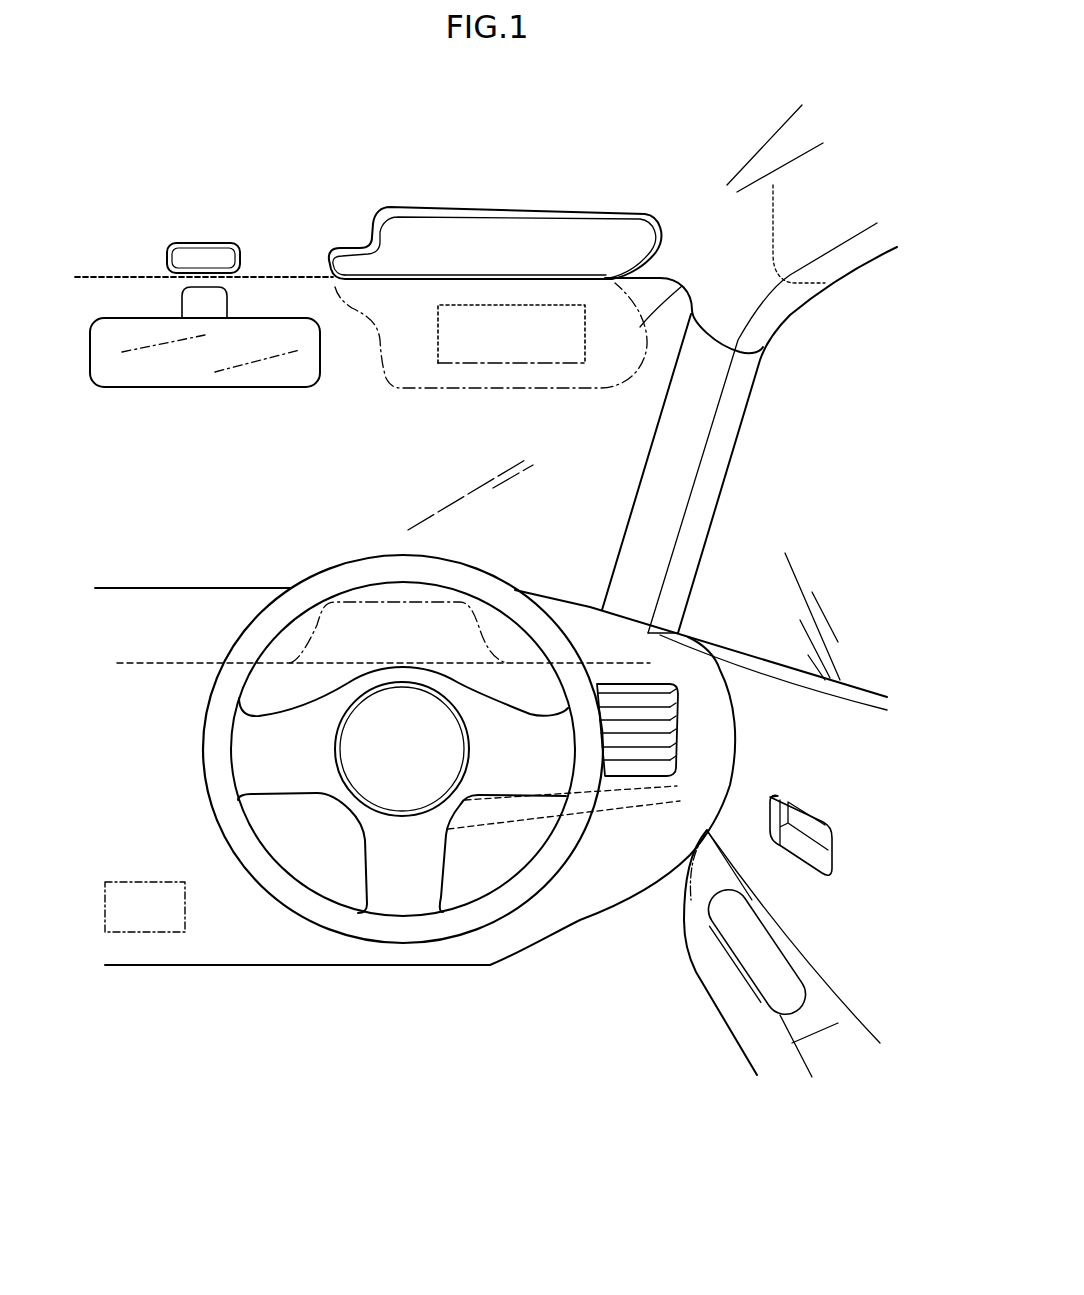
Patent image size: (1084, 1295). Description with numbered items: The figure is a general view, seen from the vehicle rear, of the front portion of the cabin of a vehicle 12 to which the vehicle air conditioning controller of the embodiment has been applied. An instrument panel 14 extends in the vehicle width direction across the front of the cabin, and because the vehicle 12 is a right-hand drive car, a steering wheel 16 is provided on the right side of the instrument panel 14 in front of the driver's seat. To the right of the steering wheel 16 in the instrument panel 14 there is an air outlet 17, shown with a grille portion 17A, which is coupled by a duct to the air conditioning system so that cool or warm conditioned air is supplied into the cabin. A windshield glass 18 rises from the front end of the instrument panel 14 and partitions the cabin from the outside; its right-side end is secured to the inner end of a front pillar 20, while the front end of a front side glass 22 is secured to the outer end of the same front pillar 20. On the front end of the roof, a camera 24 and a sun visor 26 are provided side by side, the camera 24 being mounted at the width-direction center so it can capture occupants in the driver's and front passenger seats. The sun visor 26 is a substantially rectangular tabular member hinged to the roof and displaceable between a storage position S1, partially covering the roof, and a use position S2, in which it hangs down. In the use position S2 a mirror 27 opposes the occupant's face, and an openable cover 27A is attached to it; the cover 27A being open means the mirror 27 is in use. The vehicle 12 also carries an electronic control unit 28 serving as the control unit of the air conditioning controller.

The vehicle 12 is at (618, 1088).
The instrument panel 14 is at (610, 910).
The steering wheel 16 is at (343, 562).
The air outlet 17 is at (652, 683).
The grip portion of lever 17A is at (660, 738).
The windshield glass 18 is at (575, 515).
The front pillar 20 is at (738, 393).
The front side glass 22 is at (795, 640).
The camera 24 is at (203, 240).
The sun visor 26 is at (457, 207).
The mirror 27 is at (570, 364).
The cover 27A is at (483, 347).
The electronic control unit (ECU) 28 is at (150, 932).
The storage position S1 is at (566, 208).
The use position S2 is at (677, 283).